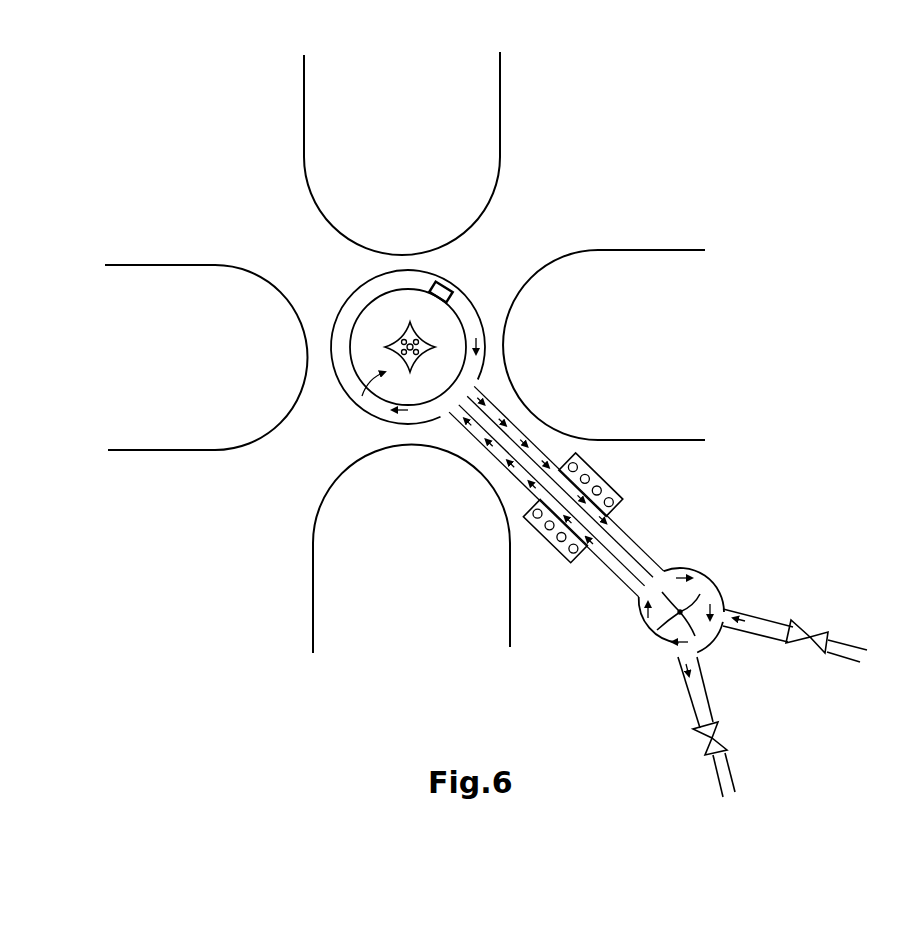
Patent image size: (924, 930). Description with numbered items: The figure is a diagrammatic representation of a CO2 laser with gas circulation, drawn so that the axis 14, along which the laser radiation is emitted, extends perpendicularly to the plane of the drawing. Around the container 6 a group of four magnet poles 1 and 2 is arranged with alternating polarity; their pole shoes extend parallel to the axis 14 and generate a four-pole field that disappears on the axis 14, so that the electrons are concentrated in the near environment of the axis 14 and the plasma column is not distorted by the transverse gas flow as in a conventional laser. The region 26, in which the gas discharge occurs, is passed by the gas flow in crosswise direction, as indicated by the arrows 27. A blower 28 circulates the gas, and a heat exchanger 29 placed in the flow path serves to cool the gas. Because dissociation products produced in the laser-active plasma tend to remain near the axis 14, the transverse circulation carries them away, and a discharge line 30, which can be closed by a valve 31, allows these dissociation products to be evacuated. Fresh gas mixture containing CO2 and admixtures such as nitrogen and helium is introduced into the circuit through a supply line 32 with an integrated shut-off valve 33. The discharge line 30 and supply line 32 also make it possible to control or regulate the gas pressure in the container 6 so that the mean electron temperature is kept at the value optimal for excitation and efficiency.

The magnet pole 1 is at (221, 372).
The magnet pole 2 is at (411, 188).
The container 6 is at (432, 292).
The longitudinal axis 14 is at (418, 340).
The region 26 is at (368, 312).
The arrows 27 is at (468, 302).
The blower 28 is at (682, 610).
The heat exchanger 29 is at (572, 556).
The discharge line 30 is at (707, 702).
The valve 31 is at (725, 748).
The supply line 32 is at (760, 612).
The shut-off valve 33 is at (818, 650).